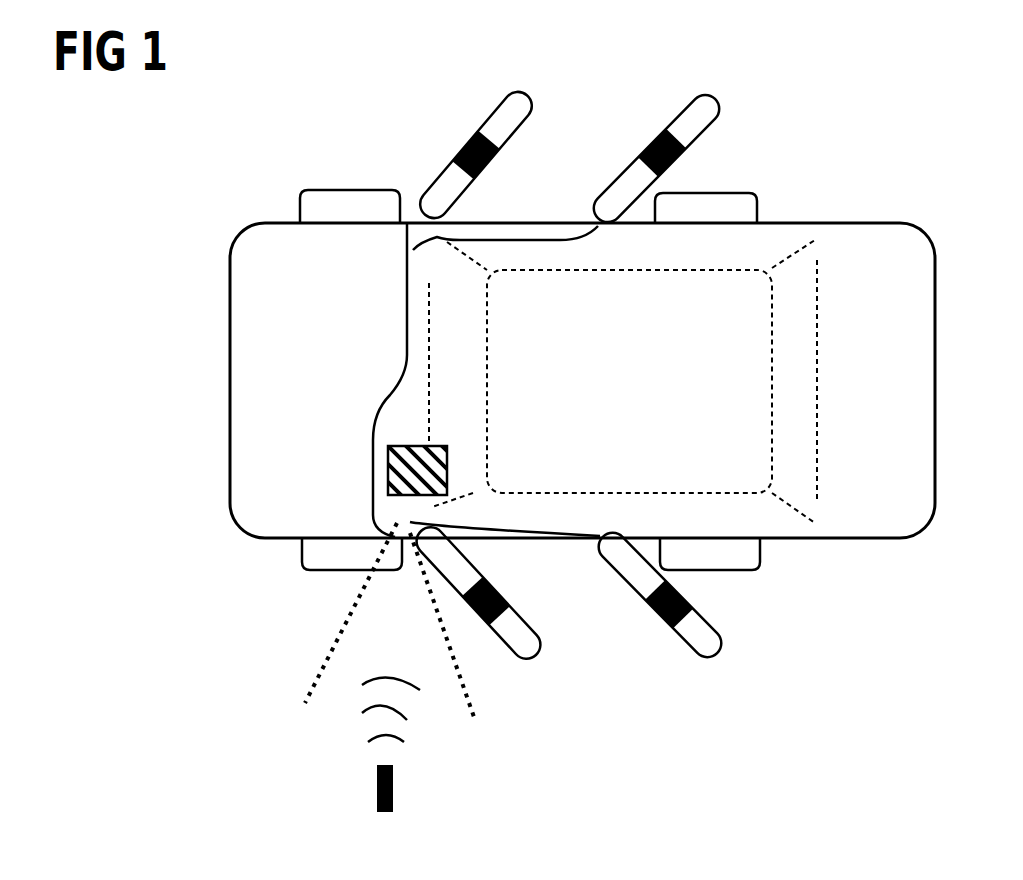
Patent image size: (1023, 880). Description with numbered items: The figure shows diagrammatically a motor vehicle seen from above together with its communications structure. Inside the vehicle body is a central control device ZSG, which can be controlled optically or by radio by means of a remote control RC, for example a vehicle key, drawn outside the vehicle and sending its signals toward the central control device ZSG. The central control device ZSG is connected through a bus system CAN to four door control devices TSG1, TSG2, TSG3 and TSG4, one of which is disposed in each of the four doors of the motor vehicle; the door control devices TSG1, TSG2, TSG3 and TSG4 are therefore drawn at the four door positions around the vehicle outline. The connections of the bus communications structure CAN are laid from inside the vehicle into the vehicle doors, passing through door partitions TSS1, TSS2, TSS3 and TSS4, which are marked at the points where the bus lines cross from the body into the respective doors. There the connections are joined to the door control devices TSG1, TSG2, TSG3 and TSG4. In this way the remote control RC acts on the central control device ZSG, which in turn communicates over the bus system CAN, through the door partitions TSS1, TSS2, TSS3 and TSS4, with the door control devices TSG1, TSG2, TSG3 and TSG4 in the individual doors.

The bus system CAN is at (403, 360).
The central control device ZSG is at (447, 447).
The door control device TSG1 is at (424, 555).
The door control device TSG2 is at (670, 630).
The door control device TSG3 is at (478, 132).
The door control device TSG4 is at (663, 135).
The door partition TSS1 is at (432, 530).
The door partition TSS2 is at (624, 536).
The door partition TSS3 is at (438, 221).
The door partition TSS4 is at (624, 223).
The remote control RC is at (394, 790).